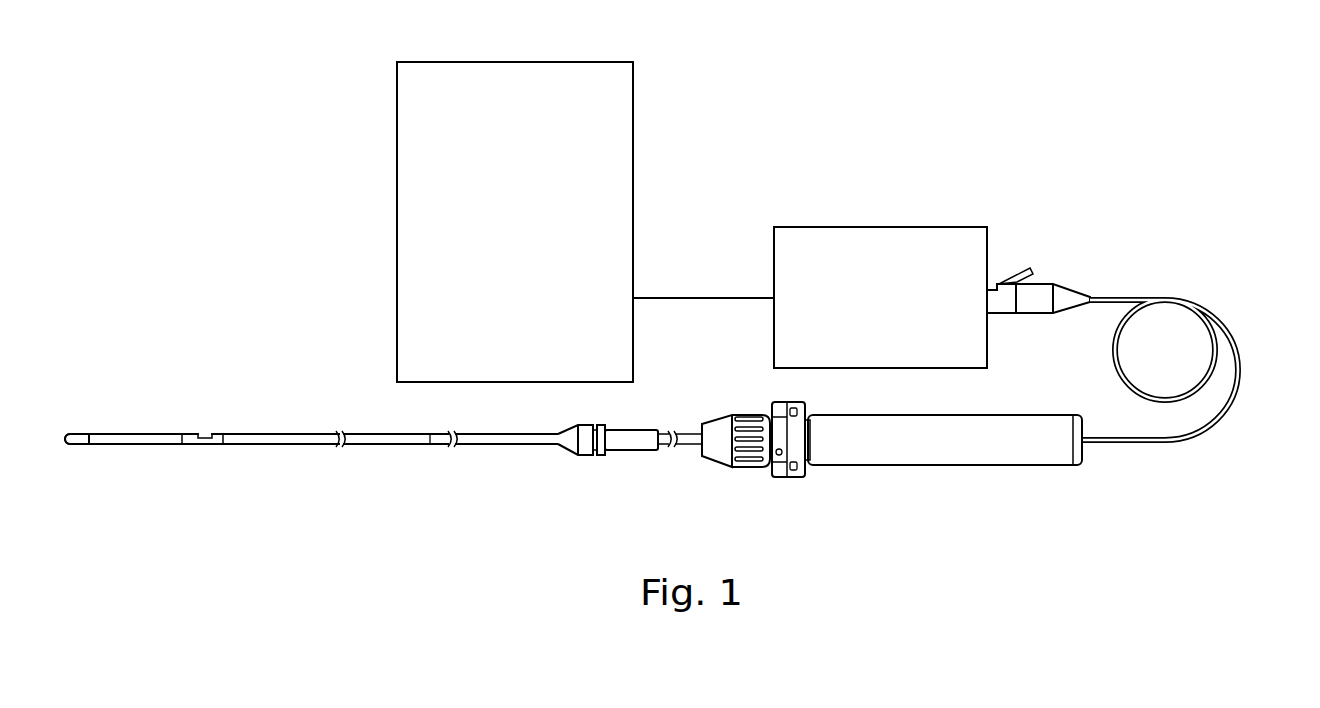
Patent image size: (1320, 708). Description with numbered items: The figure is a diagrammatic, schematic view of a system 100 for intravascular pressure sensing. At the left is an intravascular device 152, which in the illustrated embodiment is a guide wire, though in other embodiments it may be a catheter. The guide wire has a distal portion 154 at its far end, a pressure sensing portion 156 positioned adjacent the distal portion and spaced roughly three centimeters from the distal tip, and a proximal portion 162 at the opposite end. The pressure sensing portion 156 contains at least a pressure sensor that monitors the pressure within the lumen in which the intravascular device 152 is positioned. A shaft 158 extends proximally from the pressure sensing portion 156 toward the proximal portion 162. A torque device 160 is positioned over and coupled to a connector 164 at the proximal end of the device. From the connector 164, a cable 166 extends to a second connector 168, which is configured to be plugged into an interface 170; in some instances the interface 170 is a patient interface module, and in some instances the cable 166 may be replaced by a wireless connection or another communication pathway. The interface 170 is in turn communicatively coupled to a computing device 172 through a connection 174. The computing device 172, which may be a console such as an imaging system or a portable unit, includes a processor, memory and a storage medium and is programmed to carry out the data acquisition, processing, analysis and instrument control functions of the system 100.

The system 100 is at (770, 81).
The intravascular device 152 is at (440, 475).
The distal portion 154 is at (78, 433).
The pressure sensing portion 156 is at (203, 446).
The shaft 158 is at (283, 433).
The torque device 160 is at (634, 475).
The proximal portion 162 is at (688, 433).
The connector 164 is at (1019, 493).
The cable 166 is at (1242, 353).
The connector 168 is at (1045, 284).
The interface 170 is at (882, 227).
The computing device 172 is at (397, 222).
The connection 174 is at (703, 297).